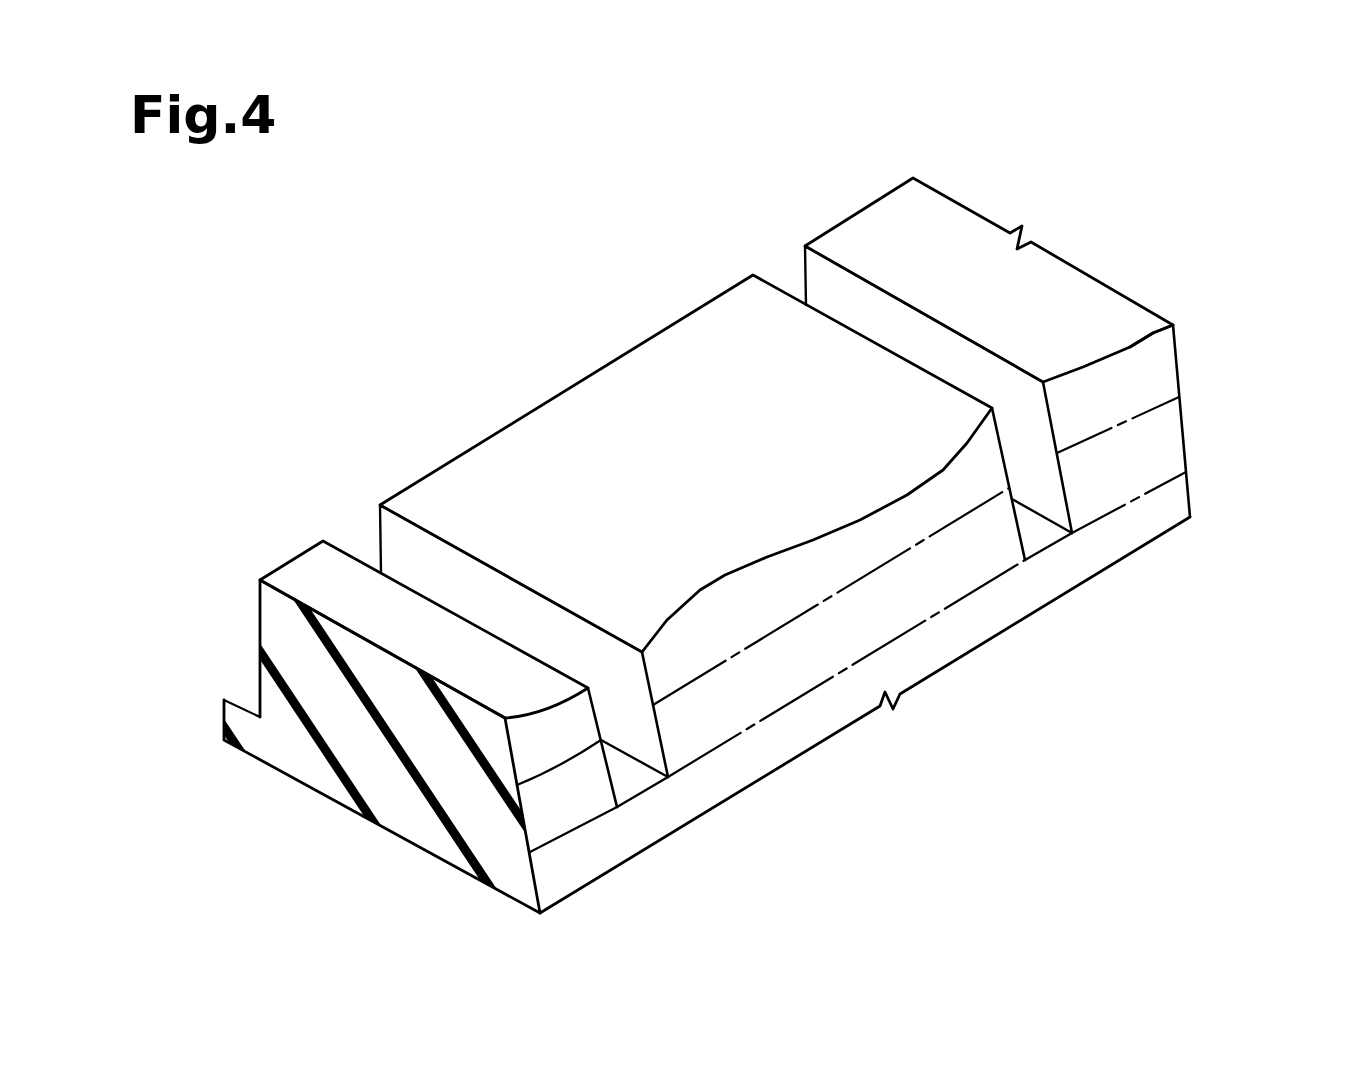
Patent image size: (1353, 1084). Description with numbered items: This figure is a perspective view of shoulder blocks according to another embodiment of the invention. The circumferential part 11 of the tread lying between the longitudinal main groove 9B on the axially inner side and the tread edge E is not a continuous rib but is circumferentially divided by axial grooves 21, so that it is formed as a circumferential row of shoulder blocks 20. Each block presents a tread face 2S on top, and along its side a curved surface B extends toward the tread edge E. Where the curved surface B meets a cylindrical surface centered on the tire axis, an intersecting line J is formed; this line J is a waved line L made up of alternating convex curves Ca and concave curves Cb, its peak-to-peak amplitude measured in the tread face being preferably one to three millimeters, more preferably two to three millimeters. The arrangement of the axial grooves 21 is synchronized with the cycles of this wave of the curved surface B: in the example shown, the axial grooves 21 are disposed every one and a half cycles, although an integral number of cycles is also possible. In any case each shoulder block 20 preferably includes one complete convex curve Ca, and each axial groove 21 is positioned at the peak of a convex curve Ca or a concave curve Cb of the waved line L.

The base plate 9B is at (247, 698).
The circumferential part 11 is at (725, 517).
The shoulder blocks 20 is at (725, 517).
The axial grooves 21 is at (417, 560).
The top surface of block 2S is at (612, 422).
The tread edge E is at (1130, 347).
The curved surface B is at (1158, 375).
The intersecting line J is at (1097, 437).
The concave curves Cb is at (725, 575).
The convex curves Ca is at (907, 495).
The waved line L is at (1073, 762).